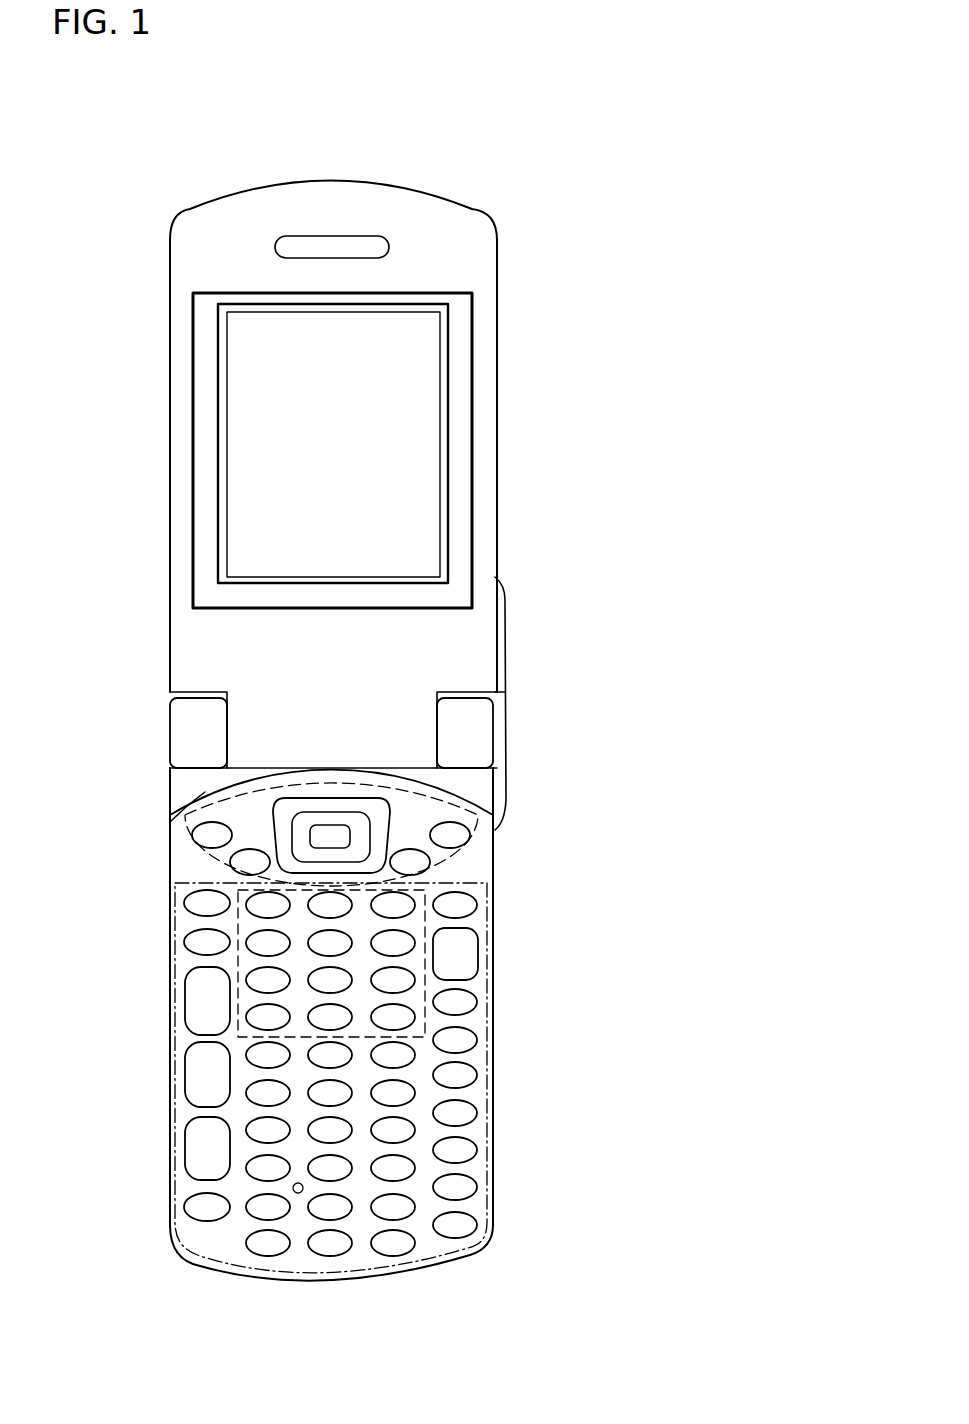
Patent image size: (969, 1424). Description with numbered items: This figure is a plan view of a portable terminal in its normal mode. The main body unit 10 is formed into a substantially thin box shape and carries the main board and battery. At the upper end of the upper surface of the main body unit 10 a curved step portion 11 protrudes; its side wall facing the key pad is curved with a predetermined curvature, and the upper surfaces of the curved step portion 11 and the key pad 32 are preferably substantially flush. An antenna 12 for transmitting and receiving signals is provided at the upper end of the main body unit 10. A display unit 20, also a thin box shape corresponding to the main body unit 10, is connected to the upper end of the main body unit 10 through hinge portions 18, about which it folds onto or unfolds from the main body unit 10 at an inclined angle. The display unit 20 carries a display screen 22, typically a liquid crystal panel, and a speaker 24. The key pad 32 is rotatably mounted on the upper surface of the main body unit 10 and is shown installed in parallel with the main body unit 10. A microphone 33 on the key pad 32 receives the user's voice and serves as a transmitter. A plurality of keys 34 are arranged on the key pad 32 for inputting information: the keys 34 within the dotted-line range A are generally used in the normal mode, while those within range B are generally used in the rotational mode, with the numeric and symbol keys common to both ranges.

The main body unit 10 is at (170, 1128).
The curved step portion 11 is at (185, 821).
The antenna 12 is at (506, 632).
The hinge portions 18 is at (262, 757).
The display unit 20 is at (447, 228).
The display screen 22 is at (420, 430).
The speaker 24 is at (330, 248).
The key pad 32 is at (430, 1247).
The microphone 33 is at (299, 1193).
The keys 34 is at (477, 1040).
The range A is at (425, 980).
The range B is at (487, 1175).